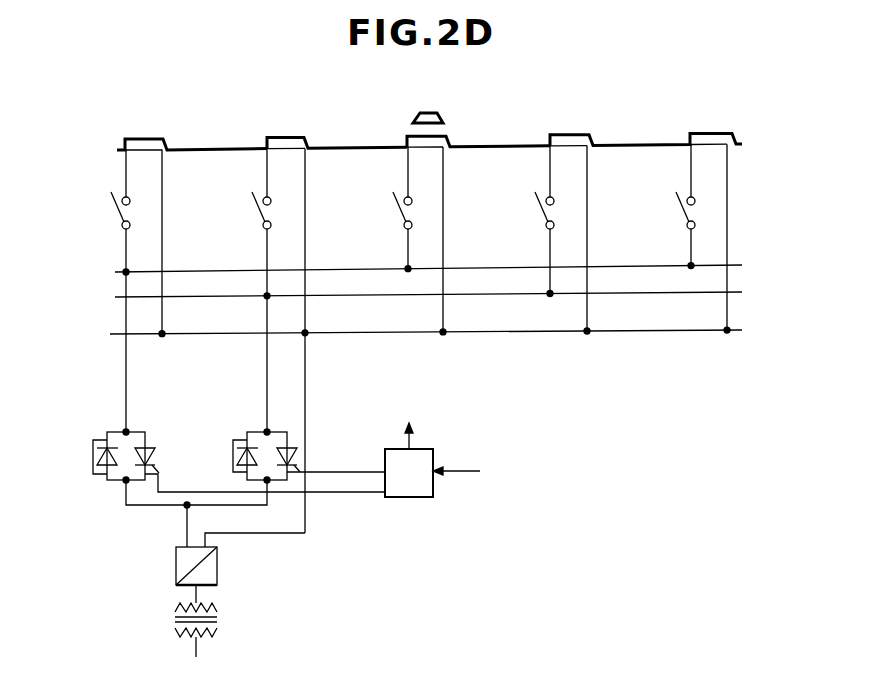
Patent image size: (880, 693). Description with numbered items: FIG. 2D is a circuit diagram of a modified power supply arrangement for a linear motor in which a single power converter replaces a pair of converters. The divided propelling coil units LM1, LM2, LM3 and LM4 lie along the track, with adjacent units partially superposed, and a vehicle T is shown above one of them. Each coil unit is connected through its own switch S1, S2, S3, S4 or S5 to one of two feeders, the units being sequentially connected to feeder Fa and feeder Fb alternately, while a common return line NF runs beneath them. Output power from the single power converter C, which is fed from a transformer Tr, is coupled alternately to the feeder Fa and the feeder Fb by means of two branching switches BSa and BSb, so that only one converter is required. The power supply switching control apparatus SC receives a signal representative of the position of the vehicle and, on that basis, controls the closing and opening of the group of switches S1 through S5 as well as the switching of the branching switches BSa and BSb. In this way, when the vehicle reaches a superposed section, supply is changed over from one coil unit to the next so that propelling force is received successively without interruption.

The propelling coil unit LM1 is at (214, 149).
The propelling coil unit LM2 is at (356, 148).
The propelling coil unit LM3 is at (498, 147).
The propelling coil unit LM4 is at (641, 145).
The vehicle / train T is at (428, 112).
The switch S1 is at (119, 213).
The switch S2 is at (261, 213).
The switch S3 is at (403, 213).
The switch S4 is at (543, 210).
The switch S5 is at (684, 210).
The feeder Fa is at (116, 272).
The feeder Fb is at (116, 297).
The neutral feeder line NF is at (111, 334).
The branching switch BSa is at (138, 432).
The branching switch BSb is at (256, 432).
The power supply switching control apparatus SC is at (411, 499).
The power converter C is at (218, 566).
The transformer Tr is at (220, 626).